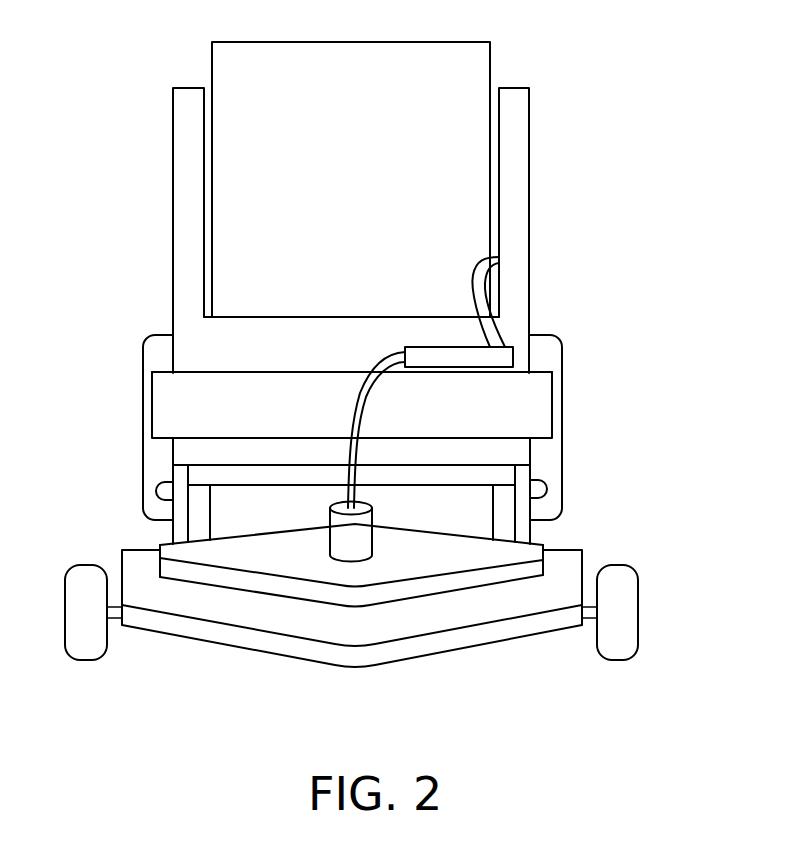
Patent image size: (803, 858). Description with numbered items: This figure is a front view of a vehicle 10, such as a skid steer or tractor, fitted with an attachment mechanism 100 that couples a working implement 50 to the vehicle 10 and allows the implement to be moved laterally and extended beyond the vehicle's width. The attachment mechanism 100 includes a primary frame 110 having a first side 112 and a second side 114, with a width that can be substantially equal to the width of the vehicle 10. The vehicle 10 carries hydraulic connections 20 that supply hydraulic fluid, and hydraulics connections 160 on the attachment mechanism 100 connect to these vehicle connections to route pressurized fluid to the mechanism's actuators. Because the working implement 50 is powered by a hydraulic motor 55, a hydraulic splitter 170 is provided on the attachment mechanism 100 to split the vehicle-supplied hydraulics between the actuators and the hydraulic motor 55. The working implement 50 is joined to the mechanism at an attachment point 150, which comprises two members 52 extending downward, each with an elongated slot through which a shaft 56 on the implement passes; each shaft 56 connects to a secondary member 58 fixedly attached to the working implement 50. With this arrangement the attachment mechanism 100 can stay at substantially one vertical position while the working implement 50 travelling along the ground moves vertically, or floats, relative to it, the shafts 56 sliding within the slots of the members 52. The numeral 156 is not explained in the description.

The vehicle 10 is at (516, 38).
The hydraulic connections 20 is at (476, 298).
The working implement 50 is at (558, 586).
The member 52 is at (181, 519).
The hydraulic motor 55 is at (340, 538).
The shaft 56 is at (546, 489).
The secondary member 58 is at (200, 518).
The attachment mechanism 100 is at (602, 401).
The primary frame 110 is at (177, 411).
The first side 112 is at (165, 386).
The second side 114 is at (562, 388).
The attachment point 150 is at (160, 503).
The left pivot bump 156 is at (164, 484).
The hydraulics connections 160 is at (496, 321).
The hydraulic splitter 170 is at (438, 357).